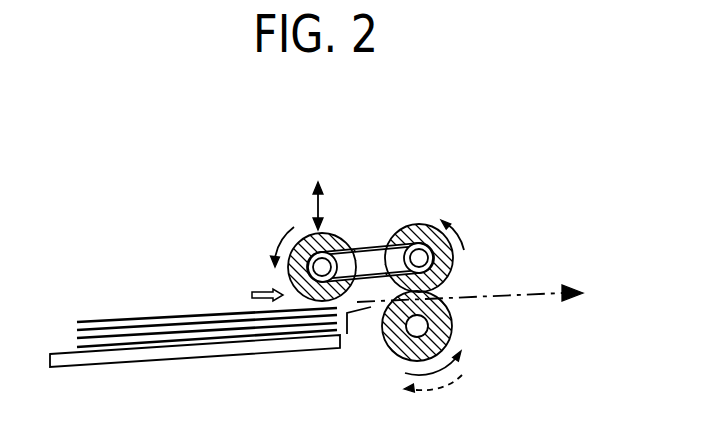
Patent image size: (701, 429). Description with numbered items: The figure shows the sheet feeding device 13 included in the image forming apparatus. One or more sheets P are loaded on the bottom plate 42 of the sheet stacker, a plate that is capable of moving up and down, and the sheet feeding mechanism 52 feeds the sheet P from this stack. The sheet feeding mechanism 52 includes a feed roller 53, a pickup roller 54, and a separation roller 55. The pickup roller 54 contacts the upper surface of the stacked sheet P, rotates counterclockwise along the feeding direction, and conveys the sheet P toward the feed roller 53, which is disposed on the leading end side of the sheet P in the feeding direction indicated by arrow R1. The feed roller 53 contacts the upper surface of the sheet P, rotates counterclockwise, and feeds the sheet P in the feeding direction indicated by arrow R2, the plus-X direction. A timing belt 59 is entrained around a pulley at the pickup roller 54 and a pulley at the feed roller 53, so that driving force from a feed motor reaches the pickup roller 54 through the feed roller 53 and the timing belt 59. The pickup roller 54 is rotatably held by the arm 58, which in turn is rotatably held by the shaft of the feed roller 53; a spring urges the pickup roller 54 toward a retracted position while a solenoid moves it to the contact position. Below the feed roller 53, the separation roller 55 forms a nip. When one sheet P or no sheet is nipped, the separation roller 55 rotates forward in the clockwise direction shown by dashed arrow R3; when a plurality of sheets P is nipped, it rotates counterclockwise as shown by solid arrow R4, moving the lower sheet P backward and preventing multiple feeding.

The sheet feeding device 13 is at (102, 219).
The bottom plate 42 is at (197, 357).
The sheet feeding mechanism 52 is at (479, 232).
The feed roller 53 is at (408, 225).
The pickup roller 54 is at (305, 233).
The separation roller 55 is at (400, 362).
The arm 58 is at (372, 243).
The timing belt 59 is at (353, 240).
The sheet P is at (178, 320).
The feeding direction arrow R1 is at (251, 295).
The feeding direction arrow R2 is at (470, 281).
The forward rotation direction arrow R3 is at (436, 397).
The reverse rotation direction arrow R4 is at (448, 351).